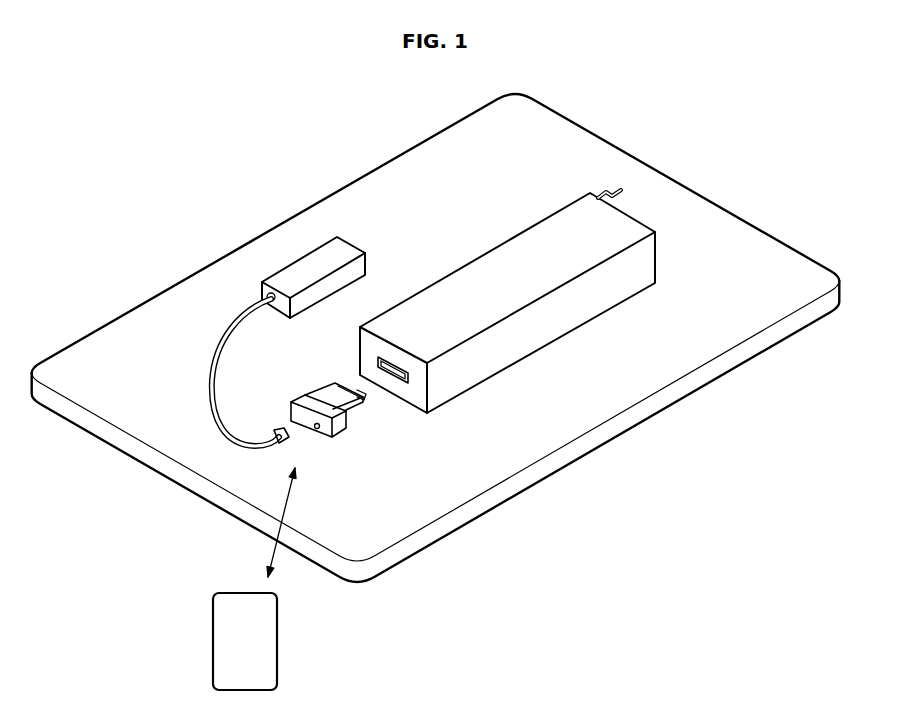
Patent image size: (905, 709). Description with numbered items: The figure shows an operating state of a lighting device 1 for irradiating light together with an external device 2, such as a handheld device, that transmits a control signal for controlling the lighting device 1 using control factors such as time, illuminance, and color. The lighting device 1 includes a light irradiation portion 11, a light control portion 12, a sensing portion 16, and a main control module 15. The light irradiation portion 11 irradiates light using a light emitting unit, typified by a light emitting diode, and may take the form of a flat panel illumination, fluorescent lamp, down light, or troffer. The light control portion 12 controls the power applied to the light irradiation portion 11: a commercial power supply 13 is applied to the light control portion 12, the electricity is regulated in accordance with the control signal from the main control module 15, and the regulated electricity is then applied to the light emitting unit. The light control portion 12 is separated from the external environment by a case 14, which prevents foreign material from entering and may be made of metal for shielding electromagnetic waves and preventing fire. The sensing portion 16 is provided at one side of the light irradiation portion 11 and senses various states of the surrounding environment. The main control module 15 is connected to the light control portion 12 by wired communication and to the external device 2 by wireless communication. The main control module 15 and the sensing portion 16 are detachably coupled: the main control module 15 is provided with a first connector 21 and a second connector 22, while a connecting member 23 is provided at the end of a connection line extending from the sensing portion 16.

The lighting device 1 is at (727, 203).
The light irradiation portion 11 is at (575, 432).
The light control portion 12 is at (572, 313).
The commercial power supply 13 is at (607, 189).
The case 14 is at (464, 380).
The main control module 15 is at (347, 415).
The sensing portion 16 is at (348, 247).
The external device 2 is at (278, 650).
The first connector 21 is at (317, 432).
The second connector 22 is at (348, 383).
The connecting member 23 is at (280, 427).